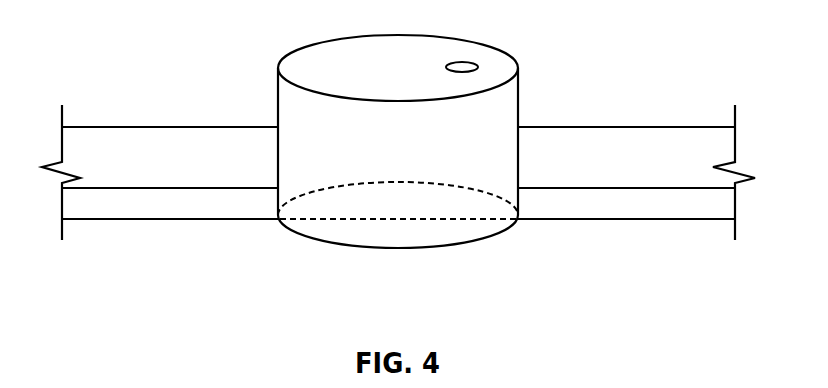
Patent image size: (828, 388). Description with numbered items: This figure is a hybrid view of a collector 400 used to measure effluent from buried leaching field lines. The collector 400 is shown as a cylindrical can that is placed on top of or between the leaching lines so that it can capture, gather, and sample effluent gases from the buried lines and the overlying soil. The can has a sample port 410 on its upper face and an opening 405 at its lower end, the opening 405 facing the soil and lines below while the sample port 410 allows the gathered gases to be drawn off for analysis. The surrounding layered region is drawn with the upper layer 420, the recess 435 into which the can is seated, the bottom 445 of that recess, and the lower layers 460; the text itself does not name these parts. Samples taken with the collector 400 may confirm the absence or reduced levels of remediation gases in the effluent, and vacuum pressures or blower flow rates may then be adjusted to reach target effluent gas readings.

The collector 400 is at (413, 160).
The opening 405 is at (412, 237).
The sample port 410 is at (462, 66).
The top layer of substrate 420 is at (615, 127).
The recess / cavity in substrate 435 is at (412, 182).
The bottom of recess 445 is at (332, 218).
The substrate layer 460 is at (615, 188).